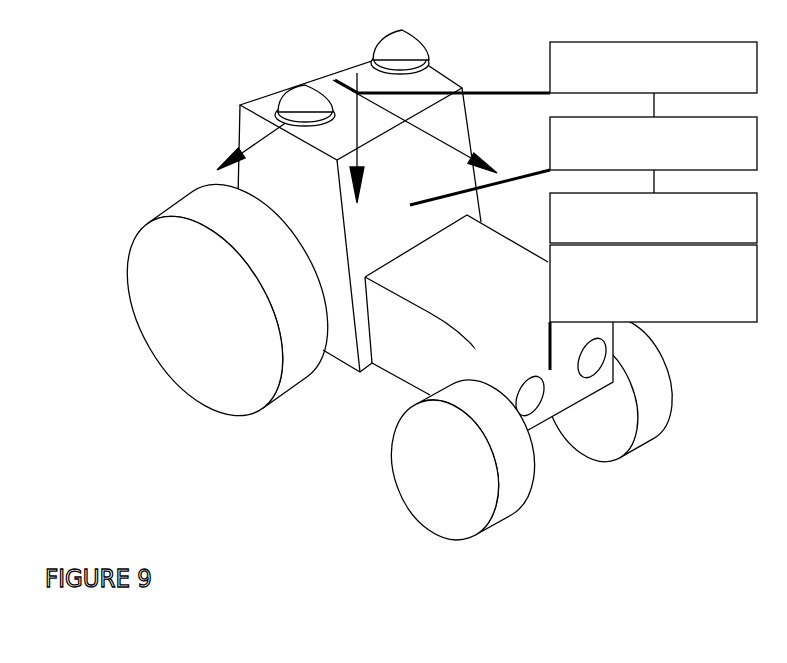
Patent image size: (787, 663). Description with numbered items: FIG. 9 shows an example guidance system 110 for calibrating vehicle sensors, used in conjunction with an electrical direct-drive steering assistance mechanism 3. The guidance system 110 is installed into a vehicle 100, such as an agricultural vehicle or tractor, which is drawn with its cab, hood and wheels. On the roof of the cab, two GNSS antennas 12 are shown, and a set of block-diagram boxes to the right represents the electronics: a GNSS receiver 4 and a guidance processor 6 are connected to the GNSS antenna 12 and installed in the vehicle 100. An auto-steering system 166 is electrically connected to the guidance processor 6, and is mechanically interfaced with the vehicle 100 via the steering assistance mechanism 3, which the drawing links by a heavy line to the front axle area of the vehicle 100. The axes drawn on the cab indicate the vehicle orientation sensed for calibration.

The guidance system 110 is at (208, 48).
The GNSS antenna 12 is at (392, 44).
The vehicle 100 is at (505, 296).
The GNSS receiver 4 is at (653, 67).
The guidance processor 6 is at (653, 143).
The auto-steering system 166 is at (653, 219).
The electrical direct-drive steering assistance mechanism 3 is at (653, 283).